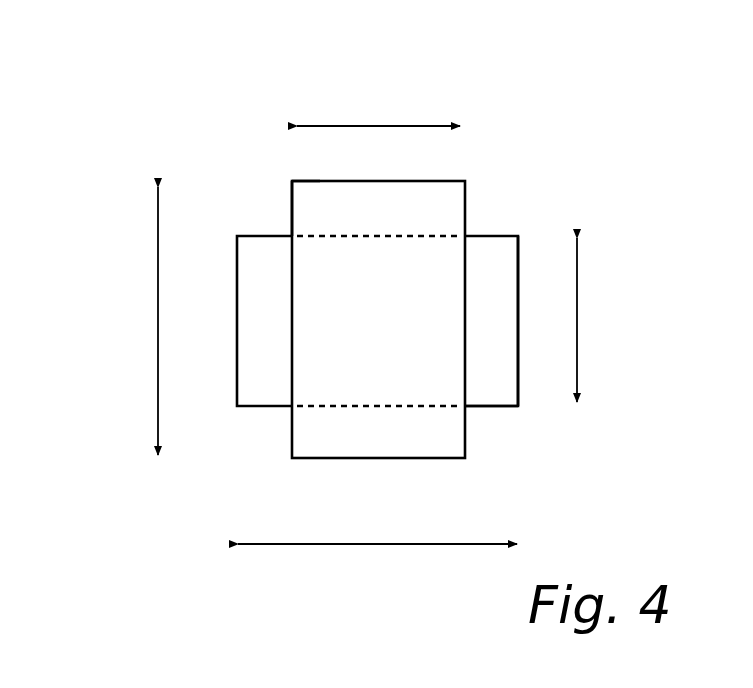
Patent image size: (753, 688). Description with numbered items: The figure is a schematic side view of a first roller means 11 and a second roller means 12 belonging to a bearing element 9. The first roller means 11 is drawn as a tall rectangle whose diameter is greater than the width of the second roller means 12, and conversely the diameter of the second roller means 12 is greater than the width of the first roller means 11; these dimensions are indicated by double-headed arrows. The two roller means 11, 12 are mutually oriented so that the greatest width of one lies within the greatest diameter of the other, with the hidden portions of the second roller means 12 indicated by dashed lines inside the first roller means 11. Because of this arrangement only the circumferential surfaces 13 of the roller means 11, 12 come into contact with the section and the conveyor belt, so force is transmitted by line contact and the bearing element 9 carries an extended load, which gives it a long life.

The bearing element 9 is at (172, 97).
The first roller means 11 is at (451, 201).
The second roller means 12 is at (500, 393).
The circumferential surfaces 13 is at (315, 181).